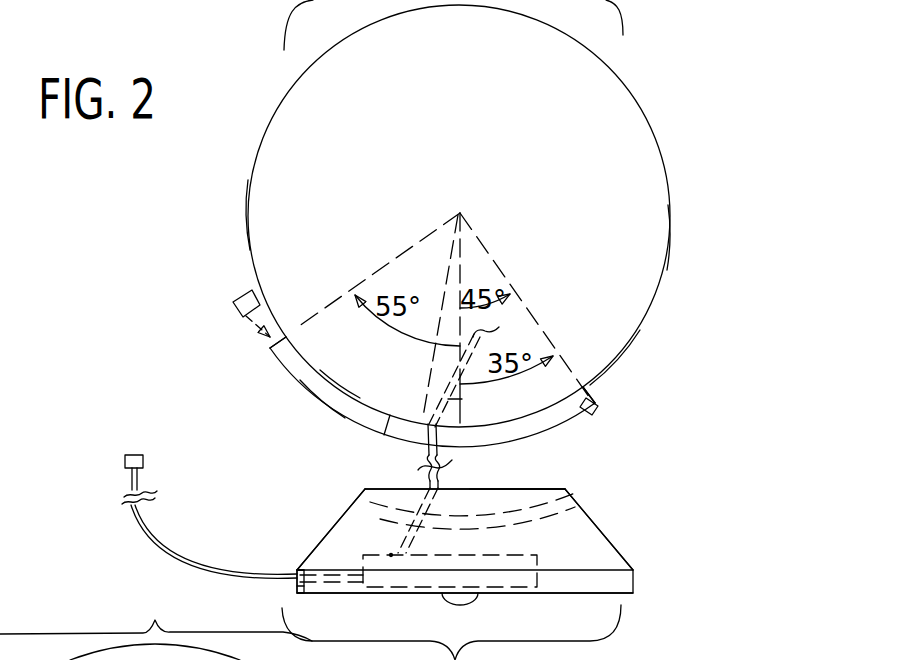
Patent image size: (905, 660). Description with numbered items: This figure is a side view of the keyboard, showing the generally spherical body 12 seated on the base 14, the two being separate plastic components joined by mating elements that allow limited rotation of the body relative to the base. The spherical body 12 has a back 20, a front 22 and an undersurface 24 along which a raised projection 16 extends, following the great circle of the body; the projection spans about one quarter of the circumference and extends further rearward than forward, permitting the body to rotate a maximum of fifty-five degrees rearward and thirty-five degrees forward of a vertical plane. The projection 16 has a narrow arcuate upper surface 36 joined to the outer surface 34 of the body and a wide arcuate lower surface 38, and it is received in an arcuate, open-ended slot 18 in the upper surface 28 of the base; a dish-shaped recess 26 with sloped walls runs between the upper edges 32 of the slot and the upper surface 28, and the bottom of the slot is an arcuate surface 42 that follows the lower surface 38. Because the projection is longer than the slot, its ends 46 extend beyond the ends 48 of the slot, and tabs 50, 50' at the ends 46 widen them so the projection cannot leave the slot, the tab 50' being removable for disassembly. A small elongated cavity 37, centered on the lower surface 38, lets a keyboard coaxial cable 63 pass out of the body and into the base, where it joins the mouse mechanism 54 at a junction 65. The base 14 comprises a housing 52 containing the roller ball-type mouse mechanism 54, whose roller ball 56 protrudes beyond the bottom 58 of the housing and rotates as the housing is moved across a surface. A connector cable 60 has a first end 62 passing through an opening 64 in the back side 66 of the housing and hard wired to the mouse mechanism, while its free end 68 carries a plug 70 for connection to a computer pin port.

The spherical body 12 is at (665, 155).
The base 14 is at (621, 534).
The raised projection 16 is at (286, 383).
The arcuate slot 18 is at (547, 497).
The back 20 is at (248, 214).
The front 22 is at (669, 238).
The undersurface 24 is at (381, 412).
The dish-shaped recess 26 is at (402, 494).
The upper surface 28 is at (525, 488).
The upper edges 32 is at (450, 510).
The outer surface 34 is at (612, 364).
The upper surface 36 is at (341, 386).
The cavity 37 is at (412, 431).
The lower surface 38 is at (321, 404).
The arcuate surface 42 is at (510, 524).
The ends 46 is at (269, 344).
The ends 48 is at (372, 497).
The tab 50 is at (618, 399).
The removable tab 50' is at (230, 297).
The housing 52 is at (590, 512).
The mouse mechanism 54 is at (503, 583).
The roller ball 56 is at (458, 603).
The bottom 58 is at (400, 597).
The connector cable 60 is at (195, 556).
The first end 62 is at (325, 573).
The keyboard coaxial cable 63 is at (450, 399).
The opening 64 is at (297, 589).
The junction 65 is at (390, 554).
The back side 66 is at (297, 573).
The free end 68 is at (139, 485).
The plug 70 is at (138, 455).